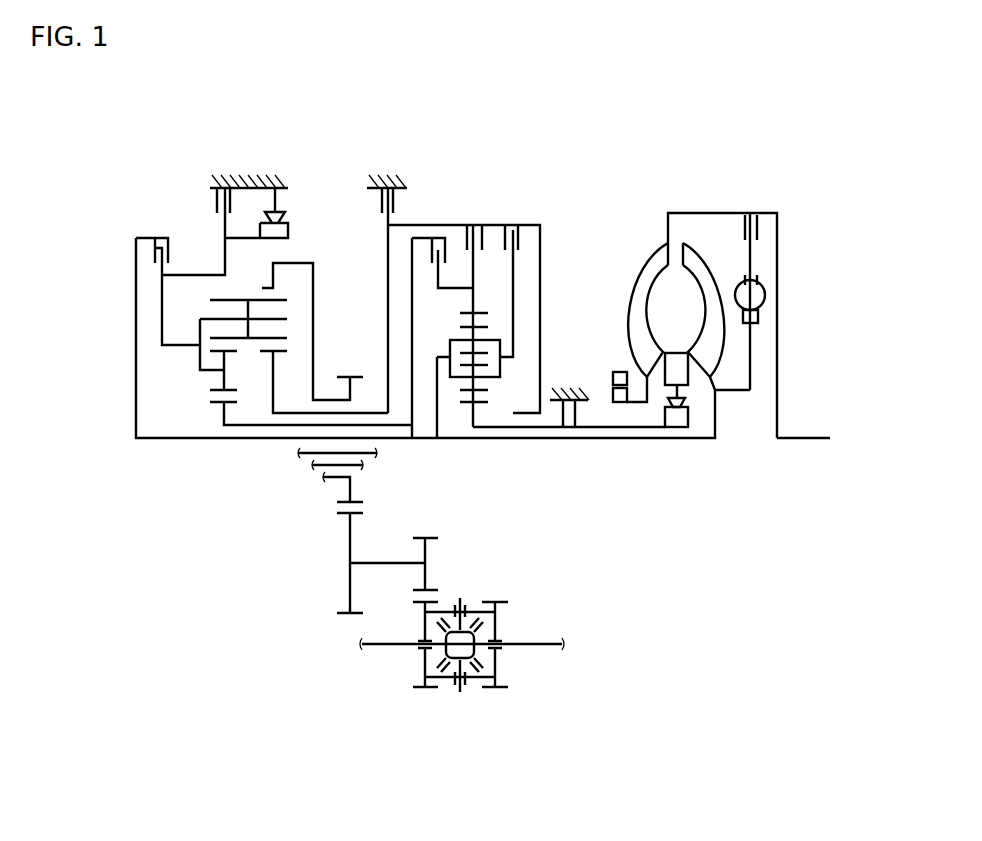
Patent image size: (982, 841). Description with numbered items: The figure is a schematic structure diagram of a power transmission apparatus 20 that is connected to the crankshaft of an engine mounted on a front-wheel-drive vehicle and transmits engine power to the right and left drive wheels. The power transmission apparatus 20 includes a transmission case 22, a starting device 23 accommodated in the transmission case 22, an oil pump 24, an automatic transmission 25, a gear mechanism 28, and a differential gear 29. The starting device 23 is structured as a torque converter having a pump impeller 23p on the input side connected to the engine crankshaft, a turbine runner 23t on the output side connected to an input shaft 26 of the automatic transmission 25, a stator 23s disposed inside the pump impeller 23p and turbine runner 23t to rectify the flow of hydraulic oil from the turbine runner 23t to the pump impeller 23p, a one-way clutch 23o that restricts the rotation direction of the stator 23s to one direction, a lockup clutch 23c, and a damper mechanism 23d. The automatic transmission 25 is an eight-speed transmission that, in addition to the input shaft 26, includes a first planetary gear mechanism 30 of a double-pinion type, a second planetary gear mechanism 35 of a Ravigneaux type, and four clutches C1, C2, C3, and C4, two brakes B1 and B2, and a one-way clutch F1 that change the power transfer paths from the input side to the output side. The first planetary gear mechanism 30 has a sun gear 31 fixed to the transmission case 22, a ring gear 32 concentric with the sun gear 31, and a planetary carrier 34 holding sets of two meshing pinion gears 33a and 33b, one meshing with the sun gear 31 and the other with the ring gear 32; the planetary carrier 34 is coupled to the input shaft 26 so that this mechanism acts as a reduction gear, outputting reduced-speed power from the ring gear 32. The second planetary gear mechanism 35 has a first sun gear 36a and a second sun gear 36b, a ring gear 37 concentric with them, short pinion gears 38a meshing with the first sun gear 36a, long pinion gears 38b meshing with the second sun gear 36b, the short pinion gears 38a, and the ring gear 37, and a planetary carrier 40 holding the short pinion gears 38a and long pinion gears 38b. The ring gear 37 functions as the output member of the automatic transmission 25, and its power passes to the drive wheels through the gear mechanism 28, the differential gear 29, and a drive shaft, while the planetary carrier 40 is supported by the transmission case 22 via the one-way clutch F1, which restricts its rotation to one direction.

The power transmission apparatus 20 is at (571, 149).
The transmission case 22 is at (232, 177).
The starting device 23 is at (654, 232).
The pump impeller 23p is at (638, 275).
The turbine runner 23t is at (705, 290).
The stator 23s is at (676, 352).
The lockup clutch 23c is at (767, 230).
The damper mechanism 23d is at (770, 313).
The one-way clutch 23o is at (698, 418).
The oil pump 24 is at (606, 393).
The automatic transmission 25 is at (352, 197).
The input shaft 26 is at (685, 430).
The gear mechanism 28 is at (336, 530).
The differential gear 29 is at (514, 610).
The first planetary gear mechanism 30 is at (450, 321).
The sun gear 31 is at (462, 404).
The ring gear 32 is at (483, 313).
The pinion gear 33a is at (483, 360).
The pinion gear 33b is at (483, 327).
The planetary carrier 34 is at (450, 350).
The second planetary gear mechanism 35 is at (190, 400).
The first sun gear 36a is at (212, 405).
The second sun gear 36b is at (265, 380).
The ring gear 37 is at (290, 286).
The short pinion gear 38a is at (220, 385).
The long pinion gear 38b is at (215, 298).
The planetary carrier 40 is at (200, 330).
The brake B1 is at (395, 205).
The brake B2 is at (218, 200).
The clutch C1 is at (438, 250).
The clutch C2 is at (155, 250).
The clutch C3 is at (485, 240).
The clutch C4 is at (515, 245).
The one-way clutch F1 is at (290, 228).